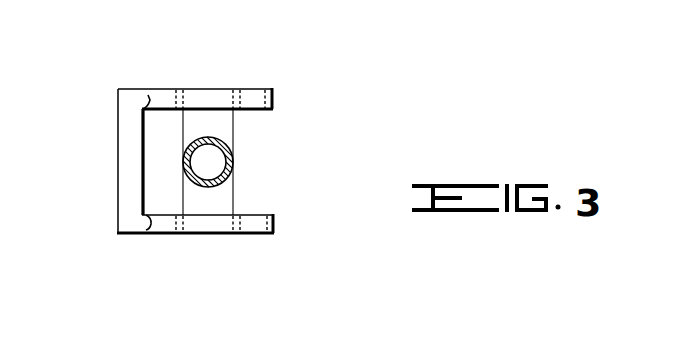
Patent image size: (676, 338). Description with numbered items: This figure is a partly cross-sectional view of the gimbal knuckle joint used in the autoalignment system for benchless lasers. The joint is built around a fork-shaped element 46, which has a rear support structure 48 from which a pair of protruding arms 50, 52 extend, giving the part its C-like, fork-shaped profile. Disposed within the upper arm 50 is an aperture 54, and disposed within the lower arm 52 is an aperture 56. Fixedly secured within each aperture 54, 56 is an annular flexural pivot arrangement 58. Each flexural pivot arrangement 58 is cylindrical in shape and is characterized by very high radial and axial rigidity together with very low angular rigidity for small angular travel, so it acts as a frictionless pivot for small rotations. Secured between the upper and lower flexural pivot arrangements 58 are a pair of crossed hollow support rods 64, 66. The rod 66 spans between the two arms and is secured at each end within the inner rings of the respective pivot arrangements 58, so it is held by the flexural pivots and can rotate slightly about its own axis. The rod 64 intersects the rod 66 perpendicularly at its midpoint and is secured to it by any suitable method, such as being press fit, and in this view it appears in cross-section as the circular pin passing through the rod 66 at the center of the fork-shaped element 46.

The fork-shaped element 46 is at (184, 172).
The rear support structure 48 is at (122, 170).
The protruding arm 50 is at (255, 89).
The protruding arm 52 is at (260, 236).
The aperture 54 is at (148, 99).
The aperture 56 is at (90, 257).
The annular flexural pivot arrangement 58 is at (178, 87).
The hollow support rod 64 is at (222, 182).
The hollow support rod 66 is at (233, 126).